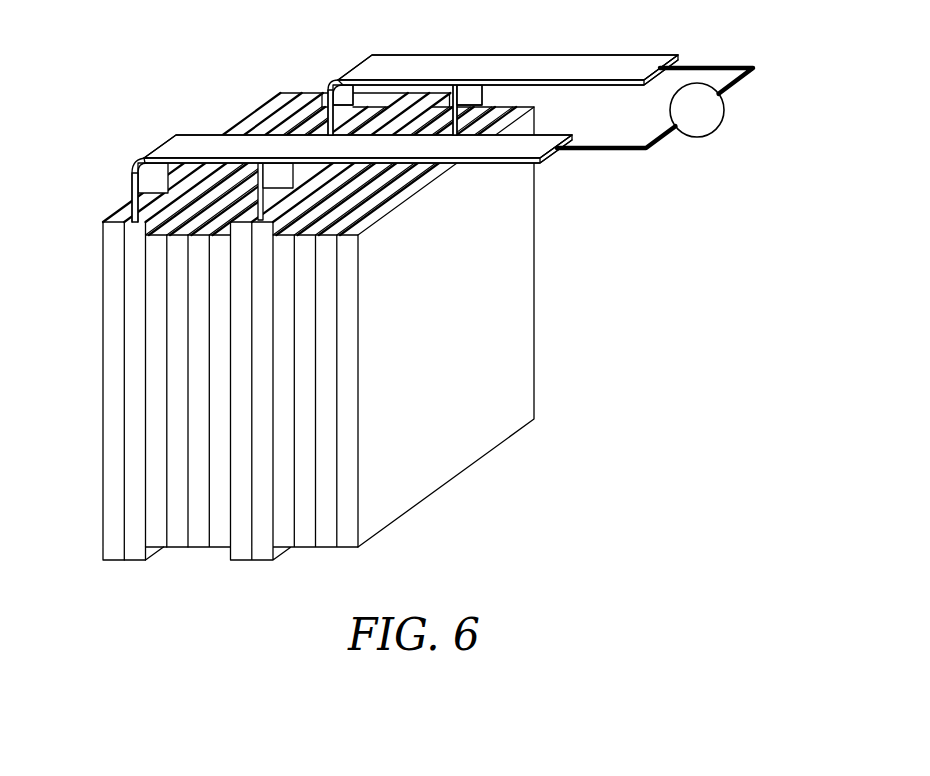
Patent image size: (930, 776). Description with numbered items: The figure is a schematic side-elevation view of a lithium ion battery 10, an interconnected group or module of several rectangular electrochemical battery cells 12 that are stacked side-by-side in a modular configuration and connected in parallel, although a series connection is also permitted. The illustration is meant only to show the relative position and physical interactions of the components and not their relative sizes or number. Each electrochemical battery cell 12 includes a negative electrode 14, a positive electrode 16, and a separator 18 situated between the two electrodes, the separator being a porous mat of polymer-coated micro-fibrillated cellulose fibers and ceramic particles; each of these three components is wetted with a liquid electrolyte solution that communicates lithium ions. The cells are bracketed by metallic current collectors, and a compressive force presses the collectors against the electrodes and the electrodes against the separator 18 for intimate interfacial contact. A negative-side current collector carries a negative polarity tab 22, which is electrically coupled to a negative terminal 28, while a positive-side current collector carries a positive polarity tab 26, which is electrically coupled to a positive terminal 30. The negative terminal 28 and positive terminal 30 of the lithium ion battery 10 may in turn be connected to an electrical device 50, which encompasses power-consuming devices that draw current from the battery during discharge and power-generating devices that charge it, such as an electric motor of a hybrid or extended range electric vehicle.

The lithium ion battery 10 is at (116, 86).
The electrochemical battery cell 12 is at (188, 553).
The negative electrode 14 is at (135, 475).
The positive electrode 16 is at (175, 408).
The separator 18 is at (153, 437).
The negative polarity tab 22 is at (128, 187).
The positive polarity tab 26 is at (325, 108).
The negative terminal 28 is at (517, 165).
The positive terminal 30 is at (577, 84).
The electrical device 50 is at (700, 112).